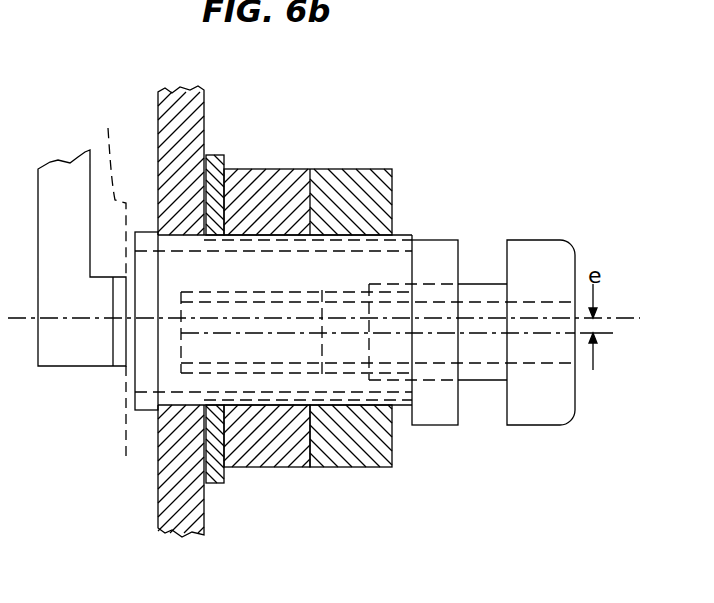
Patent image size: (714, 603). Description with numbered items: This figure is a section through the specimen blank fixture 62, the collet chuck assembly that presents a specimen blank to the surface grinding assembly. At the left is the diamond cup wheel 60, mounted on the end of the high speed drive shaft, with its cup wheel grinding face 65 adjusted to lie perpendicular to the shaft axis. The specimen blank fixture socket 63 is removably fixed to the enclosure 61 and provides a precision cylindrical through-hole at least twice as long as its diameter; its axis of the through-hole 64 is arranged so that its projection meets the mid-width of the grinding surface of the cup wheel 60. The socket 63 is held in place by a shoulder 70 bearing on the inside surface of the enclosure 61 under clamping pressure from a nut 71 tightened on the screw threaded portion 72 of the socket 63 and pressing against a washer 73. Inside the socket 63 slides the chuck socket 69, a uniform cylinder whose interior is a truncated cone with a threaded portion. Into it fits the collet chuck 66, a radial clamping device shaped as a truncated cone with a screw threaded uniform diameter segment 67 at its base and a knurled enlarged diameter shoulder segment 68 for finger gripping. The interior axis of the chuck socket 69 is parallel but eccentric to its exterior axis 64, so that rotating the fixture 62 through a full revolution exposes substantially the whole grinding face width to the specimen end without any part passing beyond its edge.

The diamond cup wheel 60 is at (58, 195).
The enclosure 61 is at (185, 118).
The specimen blank fixture 62 is at (517, 248).
The specimen blank fixture socket 63 is at (173, 240).
The axis of the through-hole 64 is at (630, 318).
The cup wheel grinding face 65 is at (105, 281).
The collet chuck 66 is at (207, 277).
The screw threaded uniform diameter segment 67 is at (403, 283).
The enlarged diameter shoulder segment 68 is at (562, 257).
The chuck socket 69 is at (270, 263).
The shoulder 70 is at (152, 412).
The nut 71 is at (275, 458).
The screw threaded portion 72 is at (297, 408).
The washer 73 is at (218, 476).